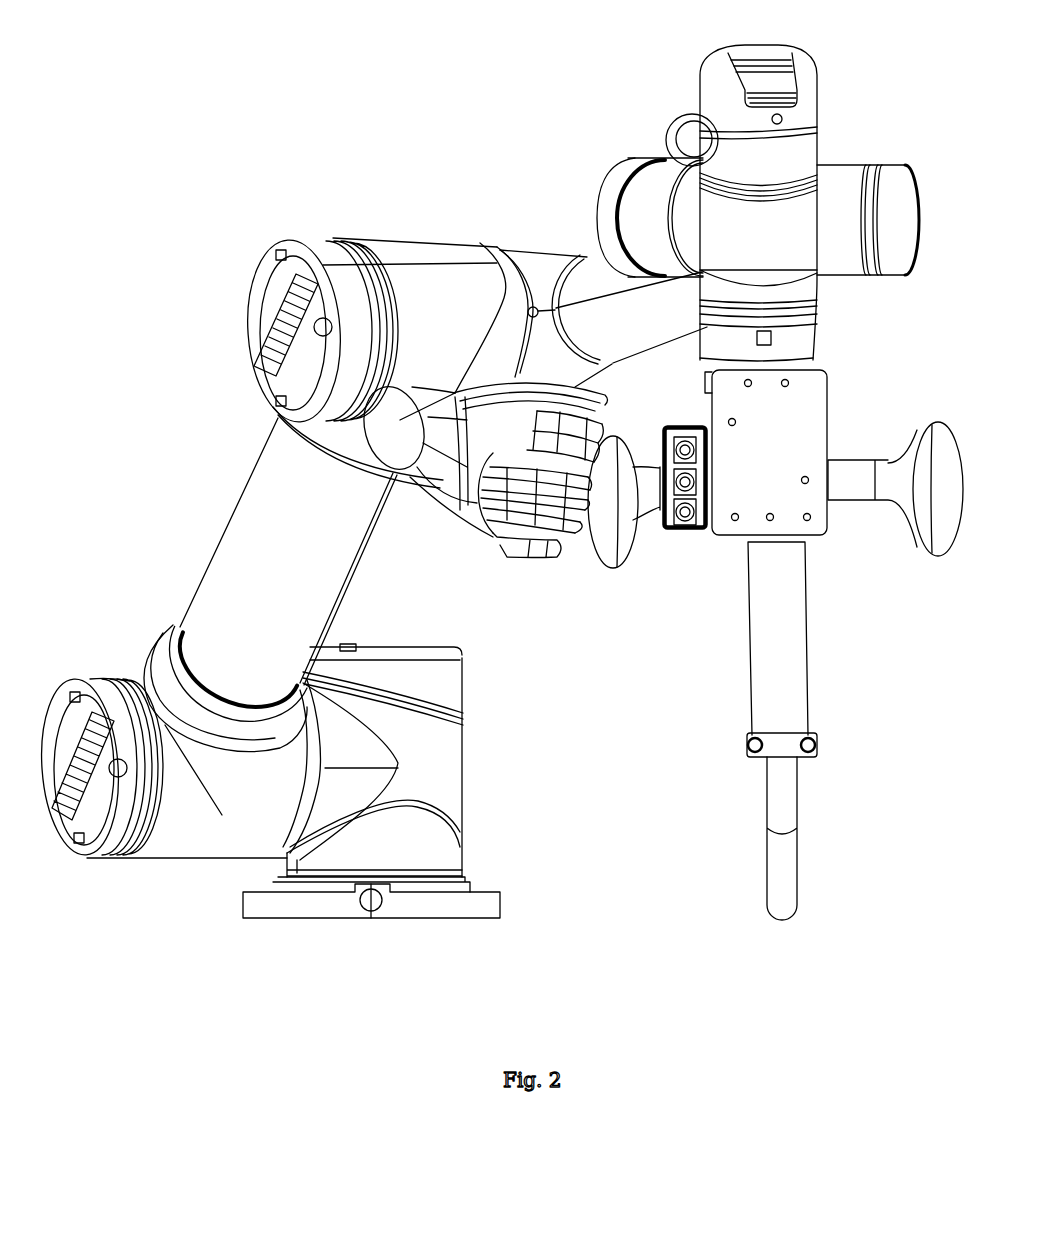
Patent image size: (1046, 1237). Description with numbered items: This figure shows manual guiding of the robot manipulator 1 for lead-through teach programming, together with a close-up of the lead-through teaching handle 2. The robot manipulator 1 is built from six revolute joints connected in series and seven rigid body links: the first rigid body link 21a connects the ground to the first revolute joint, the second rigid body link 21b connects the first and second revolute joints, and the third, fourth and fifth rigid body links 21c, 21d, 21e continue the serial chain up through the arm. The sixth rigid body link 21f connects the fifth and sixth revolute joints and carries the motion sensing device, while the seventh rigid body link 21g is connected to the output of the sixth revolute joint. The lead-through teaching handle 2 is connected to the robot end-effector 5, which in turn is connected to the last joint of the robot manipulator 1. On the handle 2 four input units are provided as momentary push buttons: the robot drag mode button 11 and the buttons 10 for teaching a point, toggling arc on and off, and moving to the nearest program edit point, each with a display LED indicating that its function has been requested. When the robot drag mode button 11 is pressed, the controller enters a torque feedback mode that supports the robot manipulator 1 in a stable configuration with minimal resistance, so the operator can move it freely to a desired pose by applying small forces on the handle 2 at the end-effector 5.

The robot manipulator 1 is at (182, 383).
The lead-through teaching handle 2 is at (625, 578).
The robot end-effector 5 is at (718, 542).
The input units 10 is at (717, 497).
The robot drag mode momentary push button 11 is at (640, 448).
The first rigid body link 21a is at (362, 924).
The second rigid body link 21b is at (466, 768).
The third rigid body link 21c is at (225, 510).
The fourth rigid body link 21d is at (583, 253).
The fifth rigid body link 21e is at (650, 180).
The sixth rigid body link 21f is at (820, 205).
The seventh rigid body link 21g is at (824, 340).